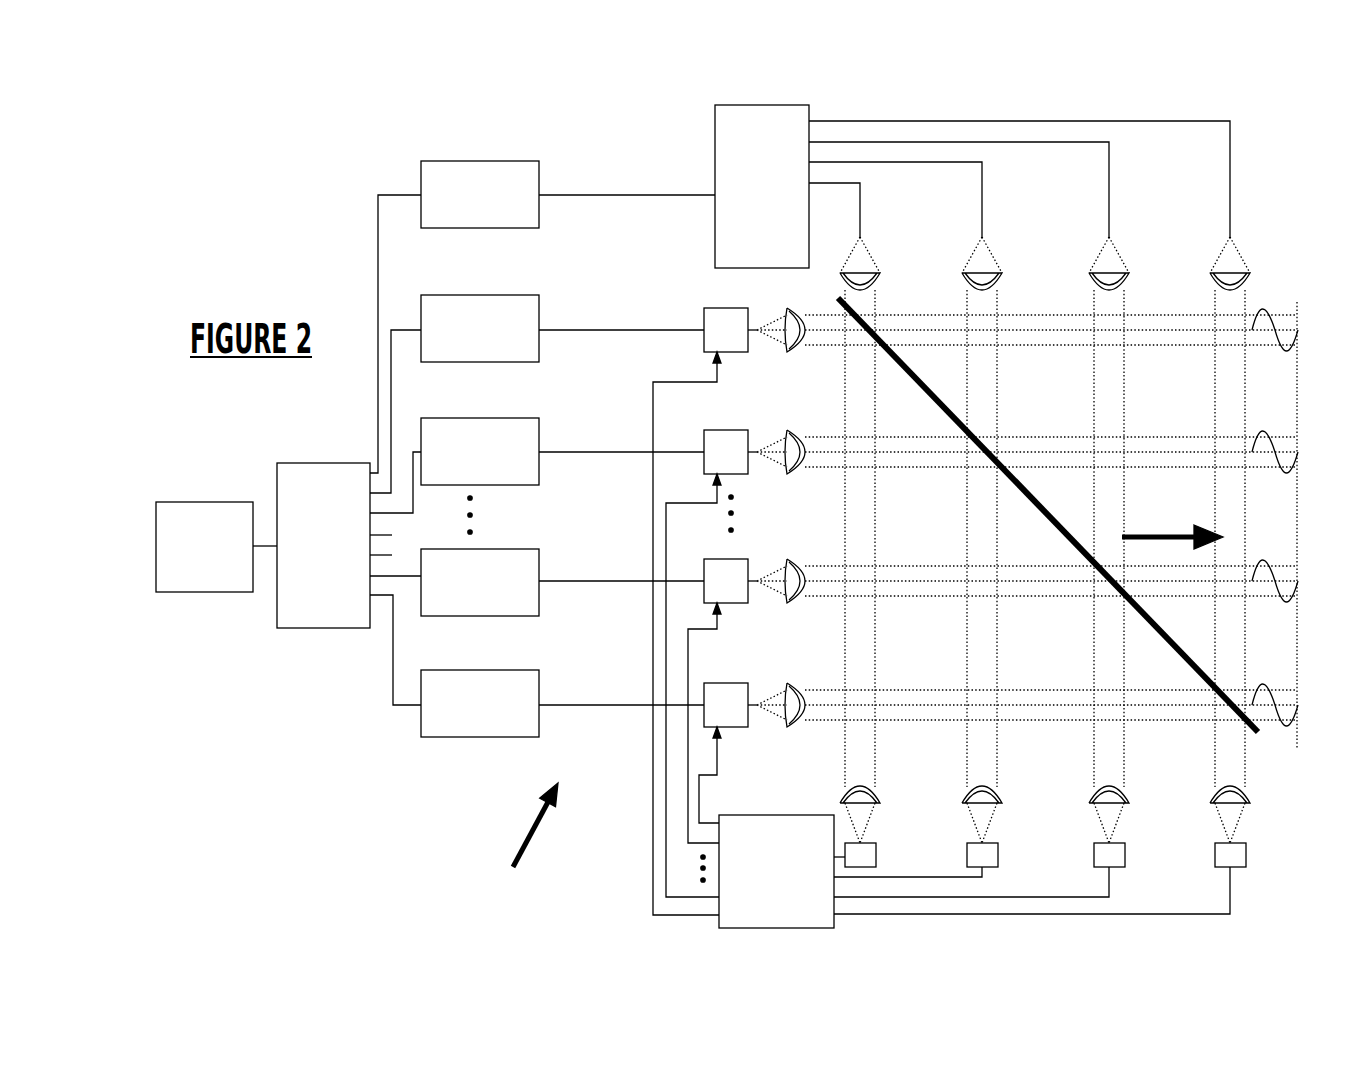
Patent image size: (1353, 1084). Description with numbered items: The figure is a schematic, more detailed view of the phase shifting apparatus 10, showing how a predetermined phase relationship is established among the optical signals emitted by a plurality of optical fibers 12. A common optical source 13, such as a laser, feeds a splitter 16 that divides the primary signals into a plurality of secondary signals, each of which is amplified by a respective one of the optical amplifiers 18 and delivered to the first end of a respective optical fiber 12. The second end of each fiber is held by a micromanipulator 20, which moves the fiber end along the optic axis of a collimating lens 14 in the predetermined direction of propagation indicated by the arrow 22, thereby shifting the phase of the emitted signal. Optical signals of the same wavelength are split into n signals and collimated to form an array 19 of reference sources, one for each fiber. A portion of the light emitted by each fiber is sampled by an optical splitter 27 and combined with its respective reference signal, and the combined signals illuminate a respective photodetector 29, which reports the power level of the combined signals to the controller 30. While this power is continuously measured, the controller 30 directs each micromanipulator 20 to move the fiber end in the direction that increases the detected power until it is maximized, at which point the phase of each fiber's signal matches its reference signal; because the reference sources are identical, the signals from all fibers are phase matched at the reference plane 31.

The apparatus 10 is at (526, 825).
The optical fibers 12 is at (603, 328).
The optical source 13 is at (193, 500).
The collimating lens 14 is at (788, 310).
The splitter 16 is at (316, 462).
The optical amplifiers 18 is at (492, 160).
The array of reference sources 19 is at (1019, 179).
The micromanipulator 20 is at (732, 307).
The arrow designating predetermined direction of propagation 22 is at (1177, 531).
The optical splitter 27 is at (1177, 654).
The photodetector 29 is at (882, 857).
The controller 30 is at (747, 813).
The reference plane 31 is at (1297, 307).